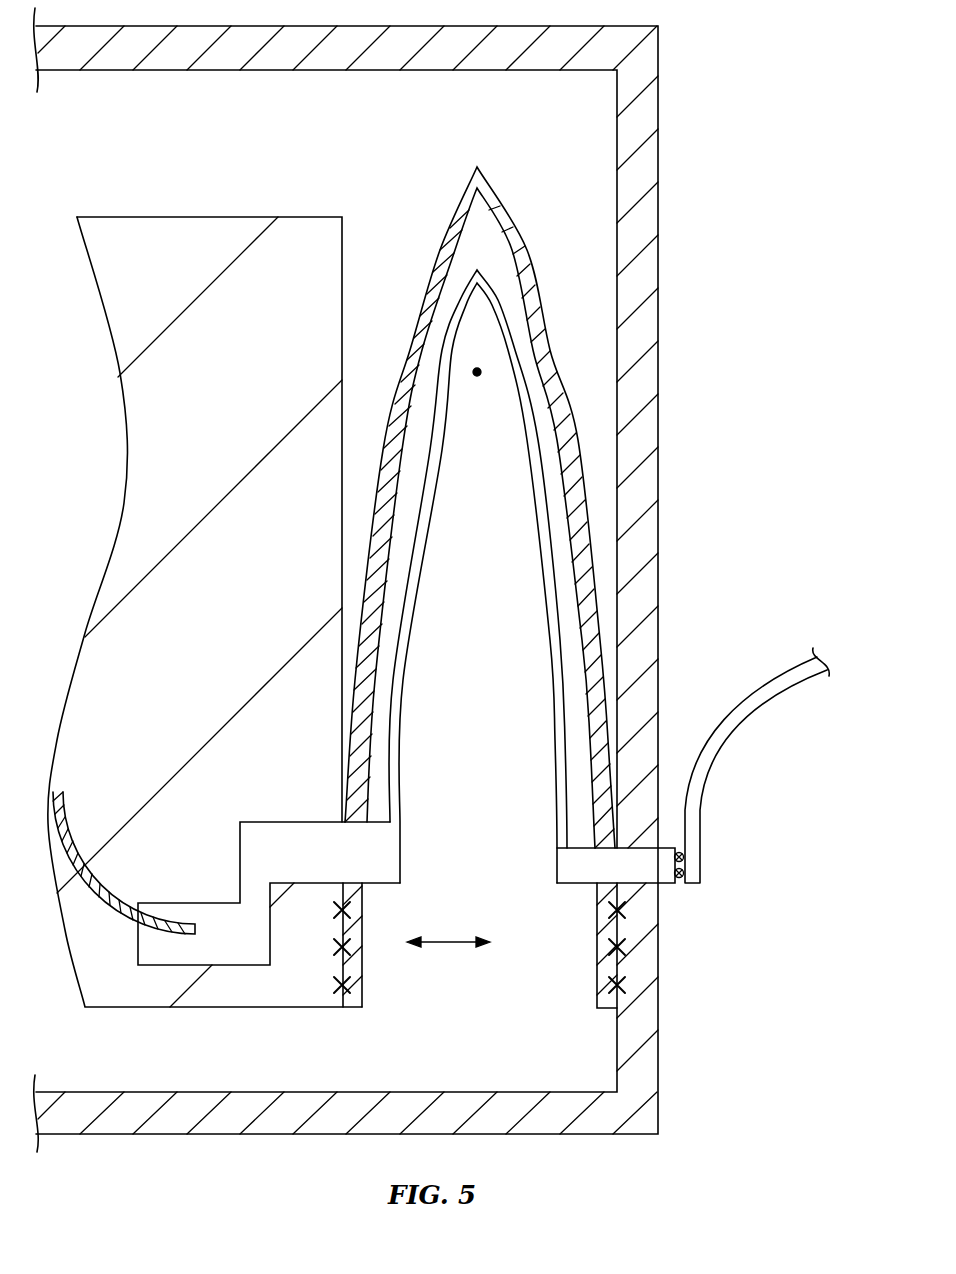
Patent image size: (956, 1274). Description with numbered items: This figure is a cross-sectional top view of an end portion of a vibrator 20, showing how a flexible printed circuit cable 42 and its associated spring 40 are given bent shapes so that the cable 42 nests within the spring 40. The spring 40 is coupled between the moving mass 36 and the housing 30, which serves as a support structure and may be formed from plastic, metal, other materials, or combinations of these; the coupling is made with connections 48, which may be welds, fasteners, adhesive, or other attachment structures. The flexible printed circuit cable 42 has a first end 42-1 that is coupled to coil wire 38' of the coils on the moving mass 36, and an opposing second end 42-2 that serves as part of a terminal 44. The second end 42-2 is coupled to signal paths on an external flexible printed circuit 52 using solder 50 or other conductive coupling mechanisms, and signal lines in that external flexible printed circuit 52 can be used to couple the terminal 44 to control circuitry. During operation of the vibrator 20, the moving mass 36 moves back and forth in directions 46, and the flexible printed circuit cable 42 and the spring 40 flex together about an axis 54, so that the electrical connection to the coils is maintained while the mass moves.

The vibrator 20 is at (803, 138).
The housing 30 is at (641, 273).
The moving mass 36 is at (242, 230).
The coil wire 38' is at (124, 842).
The spring 40 is at (437, 225).
The flexible printed circuit cable 42 is at (405, 720).
The first end 42-1 is at (223, 915).
The second end 42-2 is at (640, 853).
The terminal 44 is at (692, 895).
The directions 46 is at (455, 946).
The connections 48 is at (340, 988).
The solder 50 is at (679, 852).
The external flexible printed circuit 52 is at (710, 773).
The axis 54 is at (478, 378).